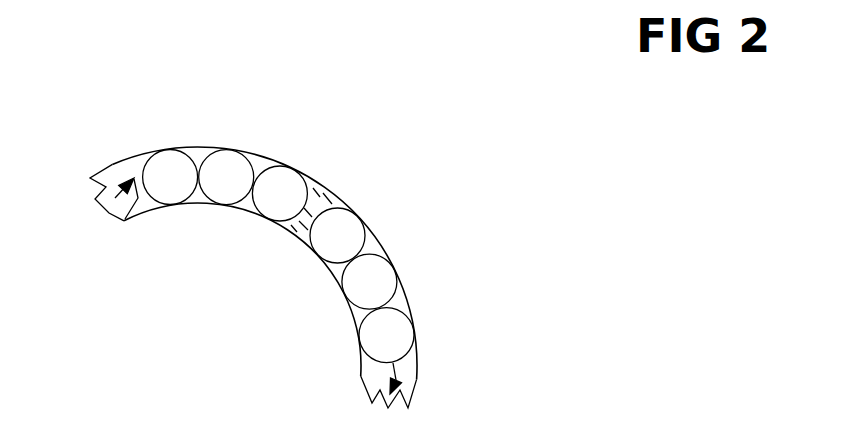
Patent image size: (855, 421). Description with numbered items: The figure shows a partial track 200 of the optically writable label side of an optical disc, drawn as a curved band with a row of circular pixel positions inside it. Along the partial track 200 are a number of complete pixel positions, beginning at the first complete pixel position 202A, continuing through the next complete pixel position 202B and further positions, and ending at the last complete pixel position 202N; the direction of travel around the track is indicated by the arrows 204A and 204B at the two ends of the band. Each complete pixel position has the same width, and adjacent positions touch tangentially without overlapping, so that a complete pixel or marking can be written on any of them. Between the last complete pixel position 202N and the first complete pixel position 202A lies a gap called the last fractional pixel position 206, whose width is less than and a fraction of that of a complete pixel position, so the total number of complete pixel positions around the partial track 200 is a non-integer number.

The partial track 200 is at (132, 167).
The first complete pixel position 202A is at (328, 135).
The complete pixel position 202B is at (222, 157).
The last complete pixel position 202N is at (347, 218).
The arrow 204A is at (123, 213).
The arrow 204B is at (400, 371).
The last fractional pixel position 206 is at (293, 247).